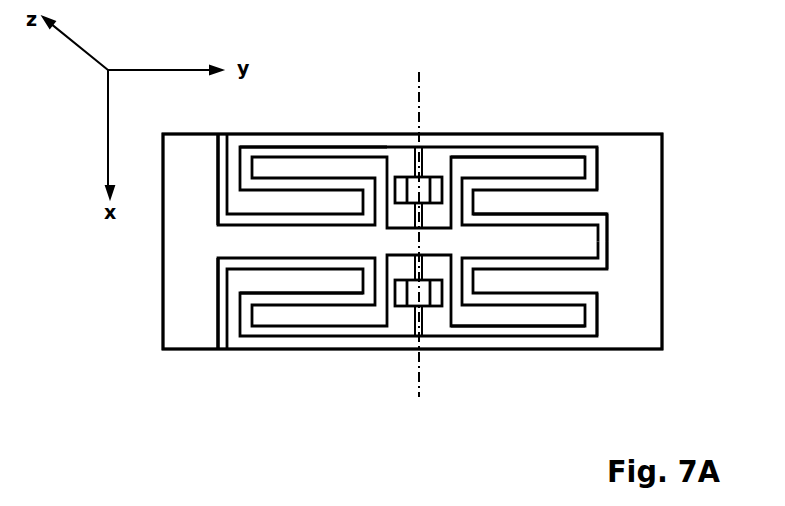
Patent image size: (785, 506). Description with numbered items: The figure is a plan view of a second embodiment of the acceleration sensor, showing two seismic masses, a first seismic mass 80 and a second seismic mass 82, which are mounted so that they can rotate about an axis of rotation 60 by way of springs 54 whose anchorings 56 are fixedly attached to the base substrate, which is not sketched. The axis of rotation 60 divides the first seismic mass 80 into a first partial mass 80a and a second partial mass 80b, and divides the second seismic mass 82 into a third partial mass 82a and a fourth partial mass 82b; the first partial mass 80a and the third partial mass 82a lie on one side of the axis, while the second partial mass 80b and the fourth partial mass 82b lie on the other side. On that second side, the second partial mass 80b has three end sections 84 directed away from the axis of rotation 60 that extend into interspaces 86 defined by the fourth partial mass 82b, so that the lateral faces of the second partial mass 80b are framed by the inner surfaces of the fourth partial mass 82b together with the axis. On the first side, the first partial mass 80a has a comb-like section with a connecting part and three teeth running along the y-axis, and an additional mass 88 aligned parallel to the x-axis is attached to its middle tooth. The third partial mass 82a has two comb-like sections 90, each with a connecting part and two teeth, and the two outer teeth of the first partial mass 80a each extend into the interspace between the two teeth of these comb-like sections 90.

The spring 54 is at (422, 176).
The anchoring 56 is at (412, 177).
The axis of rotation 60 is at (419, 397).
The first seismic mass 80 is at (172, 280).
The first partial mass 80a is at (419, 124).
The second partial mass 80b is at (664, 126).
The second seismic mass 82 is at (650, 167).
The third partial mass 82a is at (419, 358).
The fourth partial mass 82b is at (664, 356).
The end section 84 is at (604, 138).
The interspace 86 is at (551, 150).
The additional mass 88 is at (220, 356).
The comb-like section 90 is at (334, 131).